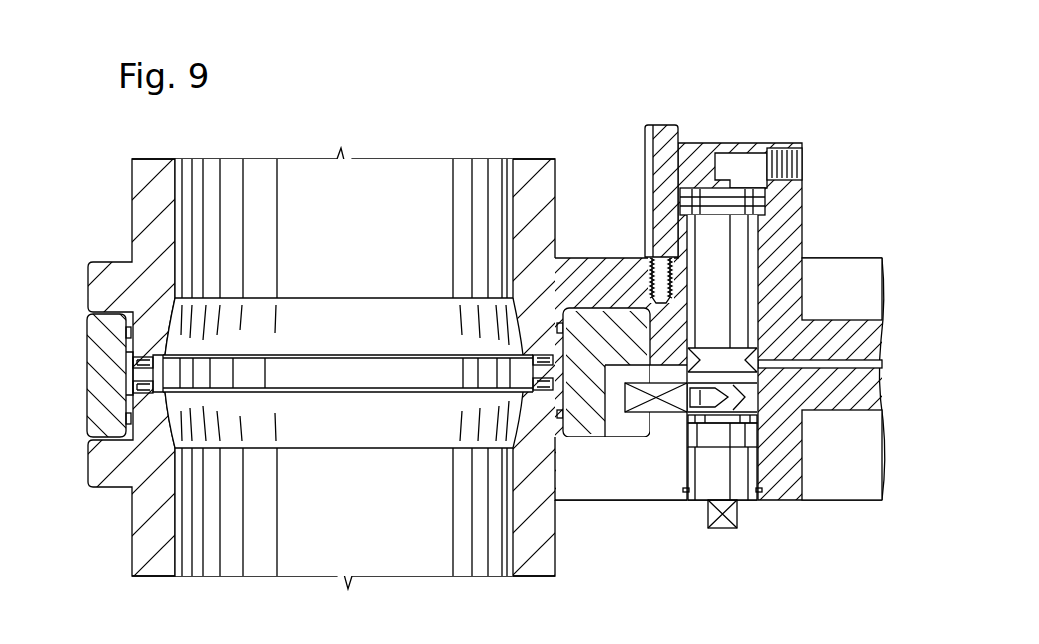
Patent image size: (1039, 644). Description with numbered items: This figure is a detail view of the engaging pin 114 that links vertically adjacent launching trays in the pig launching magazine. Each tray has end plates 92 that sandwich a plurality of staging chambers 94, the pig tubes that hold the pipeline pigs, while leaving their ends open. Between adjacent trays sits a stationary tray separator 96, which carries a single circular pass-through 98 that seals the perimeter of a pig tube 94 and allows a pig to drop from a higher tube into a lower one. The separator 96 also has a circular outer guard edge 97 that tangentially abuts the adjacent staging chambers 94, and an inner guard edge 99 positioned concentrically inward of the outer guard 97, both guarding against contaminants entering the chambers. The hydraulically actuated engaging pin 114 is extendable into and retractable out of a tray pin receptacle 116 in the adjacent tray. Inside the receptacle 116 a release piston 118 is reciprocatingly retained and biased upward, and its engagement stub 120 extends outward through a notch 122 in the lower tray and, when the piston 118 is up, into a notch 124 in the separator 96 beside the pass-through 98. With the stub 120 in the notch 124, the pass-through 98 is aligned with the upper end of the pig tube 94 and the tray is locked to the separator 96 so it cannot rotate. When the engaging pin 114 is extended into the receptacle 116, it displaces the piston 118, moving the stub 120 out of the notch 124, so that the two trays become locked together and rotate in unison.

The end plates 92 is at (838, 273).
The staging chamber 94 is at (148, 210).
The tray separator 96 is at (97, 383).
The outer guard edge 97 is at (108, 325).
The pass-through 98 is at (365, 375).
The inner guard edge 99 is at (613, 318).
The engaging pin 114 is at (737, 228).
The tray pin receptacle 116 is at (745, 475).
The release piston 118 is at (743, 433).
The engagement stub 120 is at (666, 383).
The notch 122 is at (612, 418).
The notch 124 is at (622, 475).